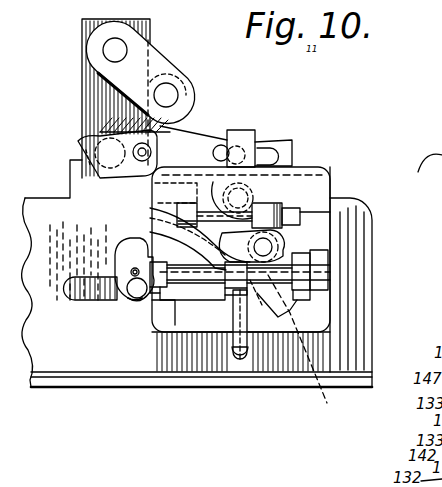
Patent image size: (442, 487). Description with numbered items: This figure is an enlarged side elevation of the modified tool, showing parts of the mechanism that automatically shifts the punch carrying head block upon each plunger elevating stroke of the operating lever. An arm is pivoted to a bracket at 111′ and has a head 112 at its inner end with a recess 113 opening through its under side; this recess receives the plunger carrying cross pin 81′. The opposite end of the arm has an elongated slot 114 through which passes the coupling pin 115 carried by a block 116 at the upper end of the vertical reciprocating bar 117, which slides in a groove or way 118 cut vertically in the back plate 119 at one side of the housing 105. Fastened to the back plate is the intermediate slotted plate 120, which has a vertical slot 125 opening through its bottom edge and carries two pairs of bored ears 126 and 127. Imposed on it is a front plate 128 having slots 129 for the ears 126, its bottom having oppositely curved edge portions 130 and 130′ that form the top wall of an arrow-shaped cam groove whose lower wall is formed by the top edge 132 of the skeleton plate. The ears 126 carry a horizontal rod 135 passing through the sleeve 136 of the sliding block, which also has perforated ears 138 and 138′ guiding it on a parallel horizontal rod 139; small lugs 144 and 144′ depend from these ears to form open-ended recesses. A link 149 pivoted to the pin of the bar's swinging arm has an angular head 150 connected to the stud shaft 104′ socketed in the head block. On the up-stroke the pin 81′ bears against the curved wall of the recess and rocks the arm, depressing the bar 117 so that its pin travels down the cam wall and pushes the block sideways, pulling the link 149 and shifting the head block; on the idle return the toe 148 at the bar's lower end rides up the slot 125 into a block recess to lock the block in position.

The housing body 105 is at (70, 261).
The head 112 is at (90, 140).
The recess 113 is at (92, 150).
The plunger carrying cross pin 81′ is at (85, 152).
The pivot 111′ is at (146, 155).
The block 116 is at (238, 130).
The coupling pin 115 is at (242, 157).
The elongated slot 114 is at (283, 150).
The front plate 128 is at (241, 248).
The slots 129 is at (178, 211).
The curved edge portion 130 is at (156, 211).
The top edge of skeleton plate 132 is at (178, 235).
The horizontal rod 135 is at (268, 208).
The sleeve 136 is at (300, 205).
The bored ears 126 is at (333, 210).
The curved edge portion 130′ is at (332, 250).
The bored ears 127 is at (322, 268).
The lug 144′ is at (282, 277).
The link 149 is at (152, 248).
The stud shaft 104′ is at (127, 302).
The horizontal rod 139 is at (164, 291).
The angular head 150 is at (127, 262).
The back plate 119 is at (357, 333).
The toe 148 is at (240, 360).
The vertical reciprocating bar 117 is at (243, 312).
The vertical slot 125 is at (236, 305).
The intermediate slotted plate 120 is at (232, 297).
The lug 144 is at (222, 300).
The perforated ear 138 is at (233, 294).
The perforated ear 138′ is at (280, 317).
The groove 118 is at (328, 398).